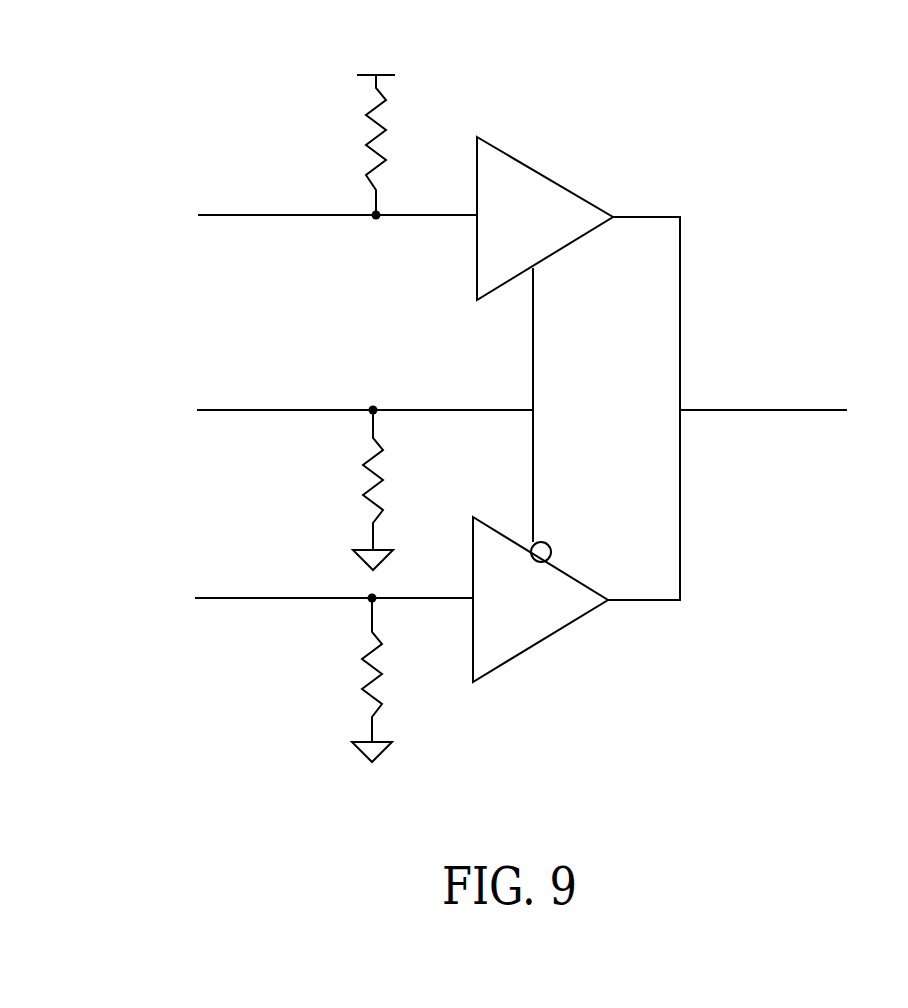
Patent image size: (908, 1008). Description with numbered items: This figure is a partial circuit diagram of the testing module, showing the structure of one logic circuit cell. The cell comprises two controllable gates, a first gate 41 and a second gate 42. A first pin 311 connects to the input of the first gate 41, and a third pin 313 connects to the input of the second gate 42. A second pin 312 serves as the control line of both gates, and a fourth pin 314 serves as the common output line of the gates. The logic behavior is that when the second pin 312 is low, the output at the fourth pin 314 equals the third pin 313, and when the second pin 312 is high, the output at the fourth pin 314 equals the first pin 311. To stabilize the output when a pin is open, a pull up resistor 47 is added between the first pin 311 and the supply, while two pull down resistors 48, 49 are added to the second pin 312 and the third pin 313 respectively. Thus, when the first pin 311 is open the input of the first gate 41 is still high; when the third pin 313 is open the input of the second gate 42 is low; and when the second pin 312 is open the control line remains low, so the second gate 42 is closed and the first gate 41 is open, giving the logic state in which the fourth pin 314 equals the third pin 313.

The first gate 41 is at (532, 187).
The second gate 42 is at (537, 635).
The pull up resistor 47 is at (370, 136).
The pull down resistor 48 is at (368, 470).
The pull down resistor 49 is at (368, 660).
The first pin 311 is at (228, 215).
The second pin 312 is at (227, 410).
The third pin 313 is at (225, 598).
The fourth pin 314 is at (800, 412).